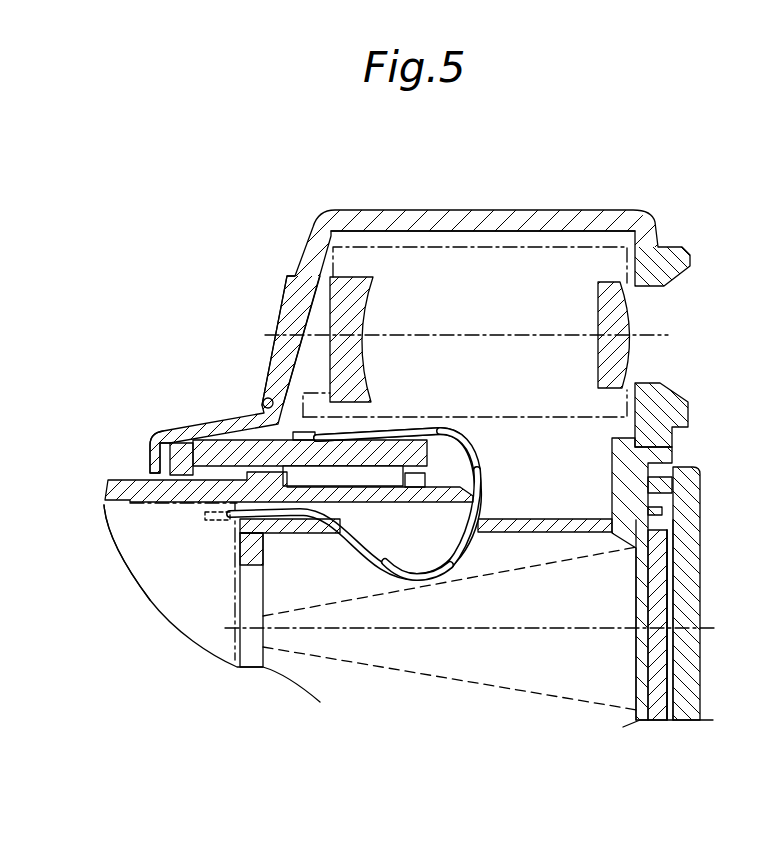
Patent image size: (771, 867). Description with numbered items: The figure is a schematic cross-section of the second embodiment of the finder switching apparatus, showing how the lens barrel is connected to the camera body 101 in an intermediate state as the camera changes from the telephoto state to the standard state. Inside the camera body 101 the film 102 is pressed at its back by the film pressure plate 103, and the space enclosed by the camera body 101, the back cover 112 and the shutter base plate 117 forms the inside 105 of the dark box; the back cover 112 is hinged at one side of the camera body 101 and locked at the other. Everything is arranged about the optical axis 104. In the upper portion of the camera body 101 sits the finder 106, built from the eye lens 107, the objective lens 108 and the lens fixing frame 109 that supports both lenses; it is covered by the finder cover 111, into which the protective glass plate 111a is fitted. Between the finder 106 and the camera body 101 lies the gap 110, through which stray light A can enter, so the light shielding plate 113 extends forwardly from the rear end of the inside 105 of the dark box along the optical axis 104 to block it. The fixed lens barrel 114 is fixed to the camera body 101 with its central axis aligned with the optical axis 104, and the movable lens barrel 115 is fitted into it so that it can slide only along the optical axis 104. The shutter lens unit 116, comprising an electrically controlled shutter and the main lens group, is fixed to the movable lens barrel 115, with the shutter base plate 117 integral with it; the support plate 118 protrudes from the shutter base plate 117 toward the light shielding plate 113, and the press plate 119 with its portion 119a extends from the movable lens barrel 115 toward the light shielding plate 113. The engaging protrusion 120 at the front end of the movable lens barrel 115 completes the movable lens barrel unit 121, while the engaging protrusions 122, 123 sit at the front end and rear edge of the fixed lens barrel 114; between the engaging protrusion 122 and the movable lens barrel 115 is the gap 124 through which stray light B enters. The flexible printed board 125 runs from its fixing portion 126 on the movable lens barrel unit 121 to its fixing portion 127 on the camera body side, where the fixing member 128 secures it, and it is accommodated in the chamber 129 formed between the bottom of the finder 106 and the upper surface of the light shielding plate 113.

The camera body 101 is at (643, 453).
The film 102 is at (638, 672).
The film pressure plate 103 is at (653, 563).
The optical axis 104 is at (707, 627).
The inside of the dark box 105 is at (667, 652).
The finder 106 is at (448, 247).
The eye lens 107 is at (597, 297).
The objective lens 108 is at (366, 300).
The lens fixing frame 109 is at (301, 432).
The gap 110 is at (660, 383).
The finder cover 111 is at (551, 211).
The protective glass plate 111a is at (287, 299).
The back cover 112 is at (700, 513).
The light shielding plate 113 is at (528, 533).
The fixed lens barrel 114 is at (213, 447).
The movable lens barrel 115 is at (133, 502).
The shutter lens unit 116 is at (163, 587).
The shutter base plate 117 is at (263, 588).
The support plate 118 is at (327, 535).
The press plate 119 is at (413, 503).
The bent portion of flexible circuit 119a is at (470, 518).
The engaging protrusion 120 is at (307, 480).
The movable lens barrel unit 121 is at (133, 591).
The engaging protrusion 122 is at (177, 447).
The engaging protrusion 123 is at (428, 453).
The gap 124 is at (160, 477).
The flexible printed board 125 is at (480, 470).
The fixing portion of FPC 126 is at (217, 520).
The fixing portion of FPC 127 is at (322, 432).
The fixing member 128 is at (275, 400).
The chamber 129 is at (649, 480).
The stray light A is at (638, 375).
The stray light B is at (135, 456).